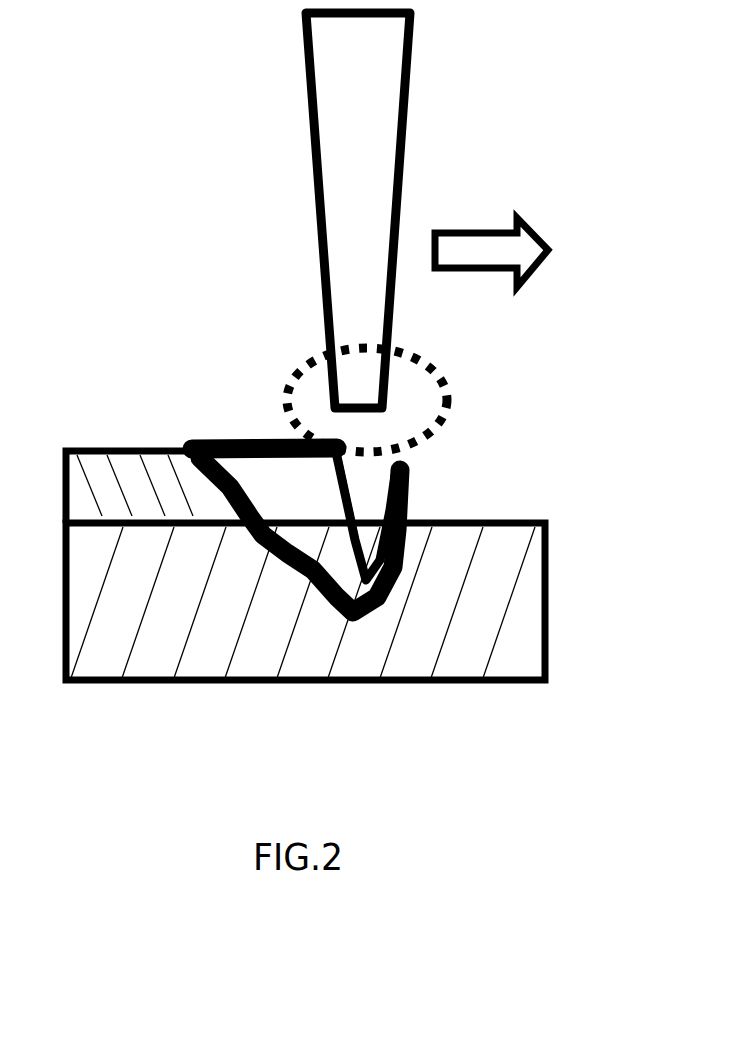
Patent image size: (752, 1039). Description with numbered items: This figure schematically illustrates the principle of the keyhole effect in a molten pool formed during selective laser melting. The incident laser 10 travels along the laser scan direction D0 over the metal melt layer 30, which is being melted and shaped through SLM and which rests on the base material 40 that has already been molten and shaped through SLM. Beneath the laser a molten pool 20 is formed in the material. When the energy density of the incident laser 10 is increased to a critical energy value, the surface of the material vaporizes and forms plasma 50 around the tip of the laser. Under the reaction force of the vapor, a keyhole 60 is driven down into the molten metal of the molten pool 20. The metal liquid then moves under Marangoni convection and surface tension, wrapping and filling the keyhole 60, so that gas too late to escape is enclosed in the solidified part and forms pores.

The incident laser 10 is at (412, 145).
The molten pool 20 is at (245, 443).
The metal melt layer 30 is at (143, 438).
The base material 40 is at (518, 625).
The plasma 50 is at (447, 377).
The keyhole 60 is at (357, 547).
The laser scan direction D0 is at (493, 222).